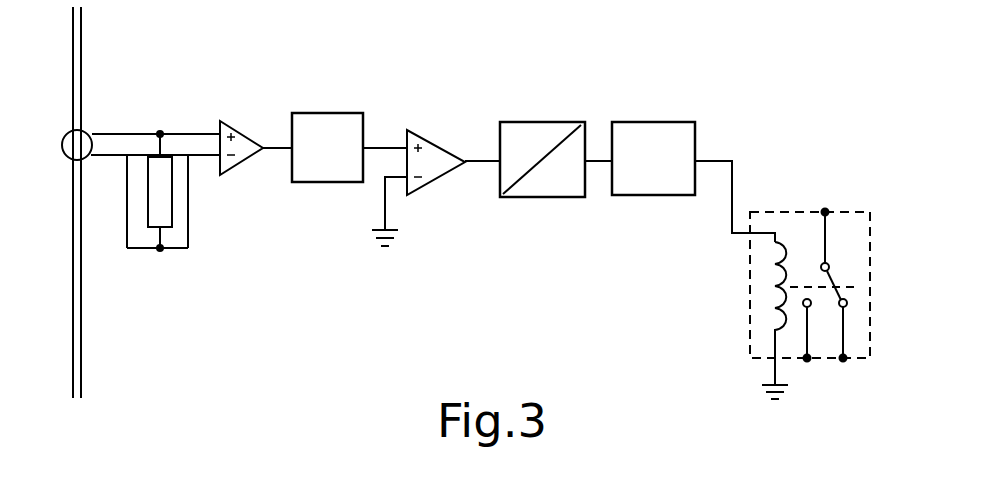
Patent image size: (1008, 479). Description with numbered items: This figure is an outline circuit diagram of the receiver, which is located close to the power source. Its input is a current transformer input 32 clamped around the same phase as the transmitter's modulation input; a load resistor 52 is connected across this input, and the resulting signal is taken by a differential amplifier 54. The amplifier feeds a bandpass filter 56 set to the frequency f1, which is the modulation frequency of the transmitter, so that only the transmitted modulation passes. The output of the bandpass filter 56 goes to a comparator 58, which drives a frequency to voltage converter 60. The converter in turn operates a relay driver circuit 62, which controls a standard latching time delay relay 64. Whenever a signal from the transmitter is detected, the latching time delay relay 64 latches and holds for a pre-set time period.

The current transformer input 32 is at (90, 130).
The load resistor 52 is at (165, 210).
The differential amplifier 54 is at (248, 137).
The bandpass filter 56 is at (322, 173).
The comparator 58 is at (437, 140).
The frequency to voltage converter 60 is at (545, 120).
The relay driver circuit 62 is at (658, 121).
The latching time delay relay 64 is at (795, 220).